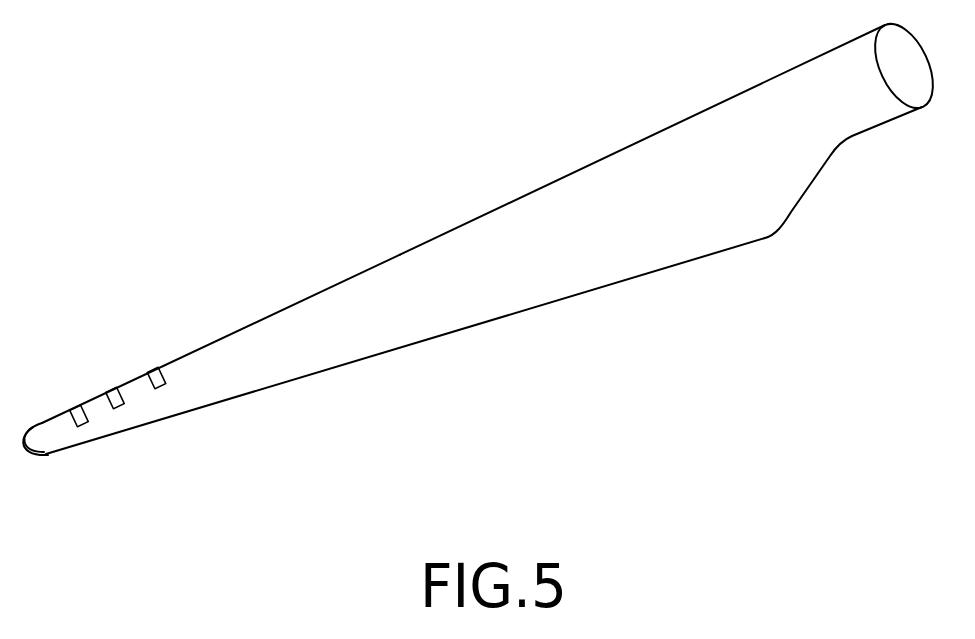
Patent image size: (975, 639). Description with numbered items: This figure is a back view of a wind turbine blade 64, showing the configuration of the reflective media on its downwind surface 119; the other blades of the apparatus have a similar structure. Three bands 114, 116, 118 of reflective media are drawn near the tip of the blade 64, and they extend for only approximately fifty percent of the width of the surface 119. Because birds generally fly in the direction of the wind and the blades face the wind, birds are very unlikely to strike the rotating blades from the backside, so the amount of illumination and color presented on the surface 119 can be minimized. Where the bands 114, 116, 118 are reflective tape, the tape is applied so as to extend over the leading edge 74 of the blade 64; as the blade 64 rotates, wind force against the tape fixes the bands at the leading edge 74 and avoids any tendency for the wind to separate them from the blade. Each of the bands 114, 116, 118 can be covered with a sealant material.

The blade 64 is at (484, 235).
The leading edge 74 is at (447, 236).
The surface 119 is at (338, 297).
The band 114 is at (76, 406).
The band 116 is at (113, 388).
The band 118 is at (154, 368).